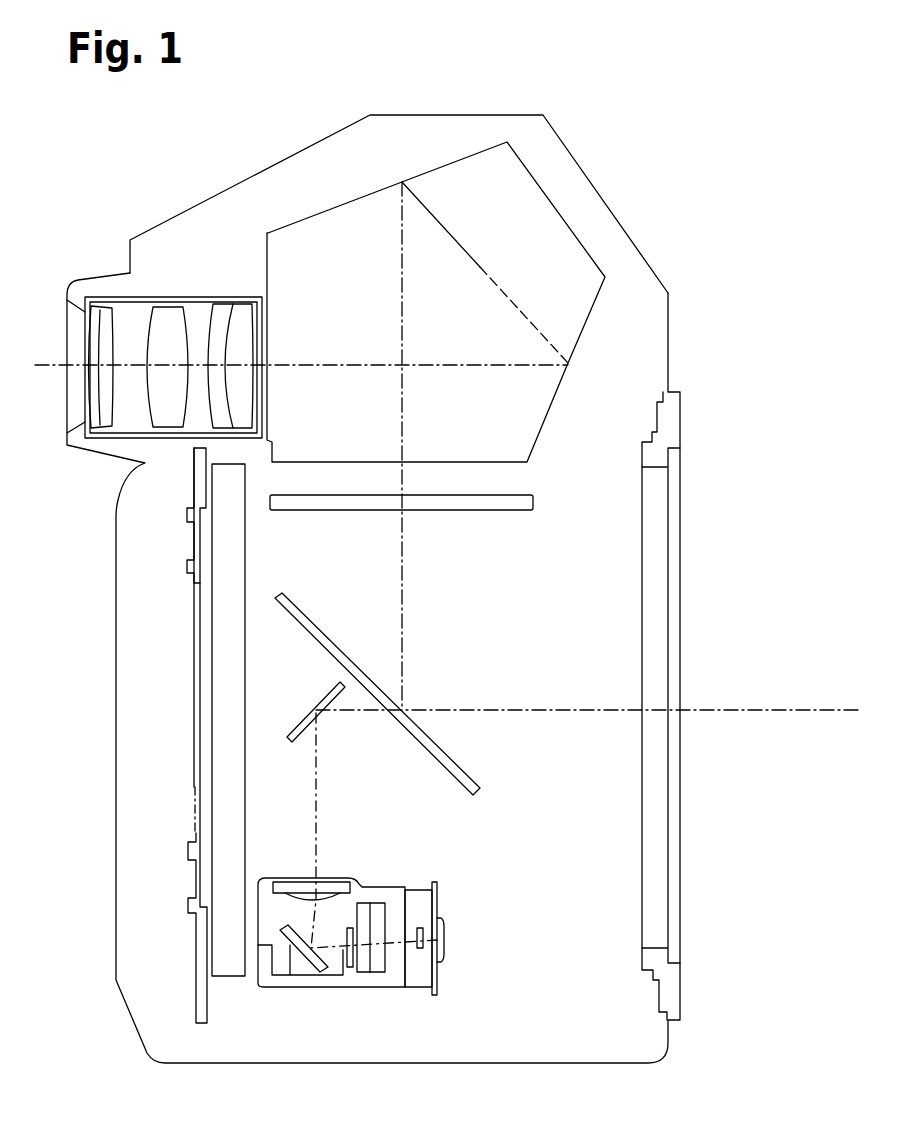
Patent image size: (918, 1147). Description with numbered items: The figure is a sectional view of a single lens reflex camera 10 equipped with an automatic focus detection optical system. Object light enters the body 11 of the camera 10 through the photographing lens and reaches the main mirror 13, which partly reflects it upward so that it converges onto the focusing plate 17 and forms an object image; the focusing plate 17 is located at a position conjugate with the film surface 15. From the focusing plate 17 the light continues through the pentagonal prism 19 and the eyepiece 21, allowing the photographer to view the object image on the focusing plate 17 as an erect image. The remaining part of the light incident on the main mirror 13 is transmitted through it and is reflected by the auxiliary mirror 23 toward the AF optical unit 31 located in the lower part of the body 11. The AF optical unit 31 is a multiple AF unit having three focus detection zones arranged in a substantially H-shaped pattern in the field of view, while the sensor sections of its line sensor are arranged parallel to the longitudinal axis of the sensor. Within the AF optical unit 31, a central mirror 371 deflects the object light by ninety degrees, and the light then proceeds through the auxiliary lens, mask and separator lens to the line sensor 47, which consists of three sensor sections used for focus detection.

The single lens reflex camera 10 is at (112, 956).
The body 11 is at (472, 112).
The main mirror 13 is at (467, 773).
The film surface 15 is at (195, 687).
The focusing plate 17 is at (534, 502).
The pentagonal prism 19 is at (570, 236).
The eyepiece 21 is at (173, 290).
The auxiliary mirror 23 is at (300, 718).
The AF optical unit 31 is at (313, 996).
The central mirror 371 is at (331, 970).
The line sensor 47 is at (418, 952).